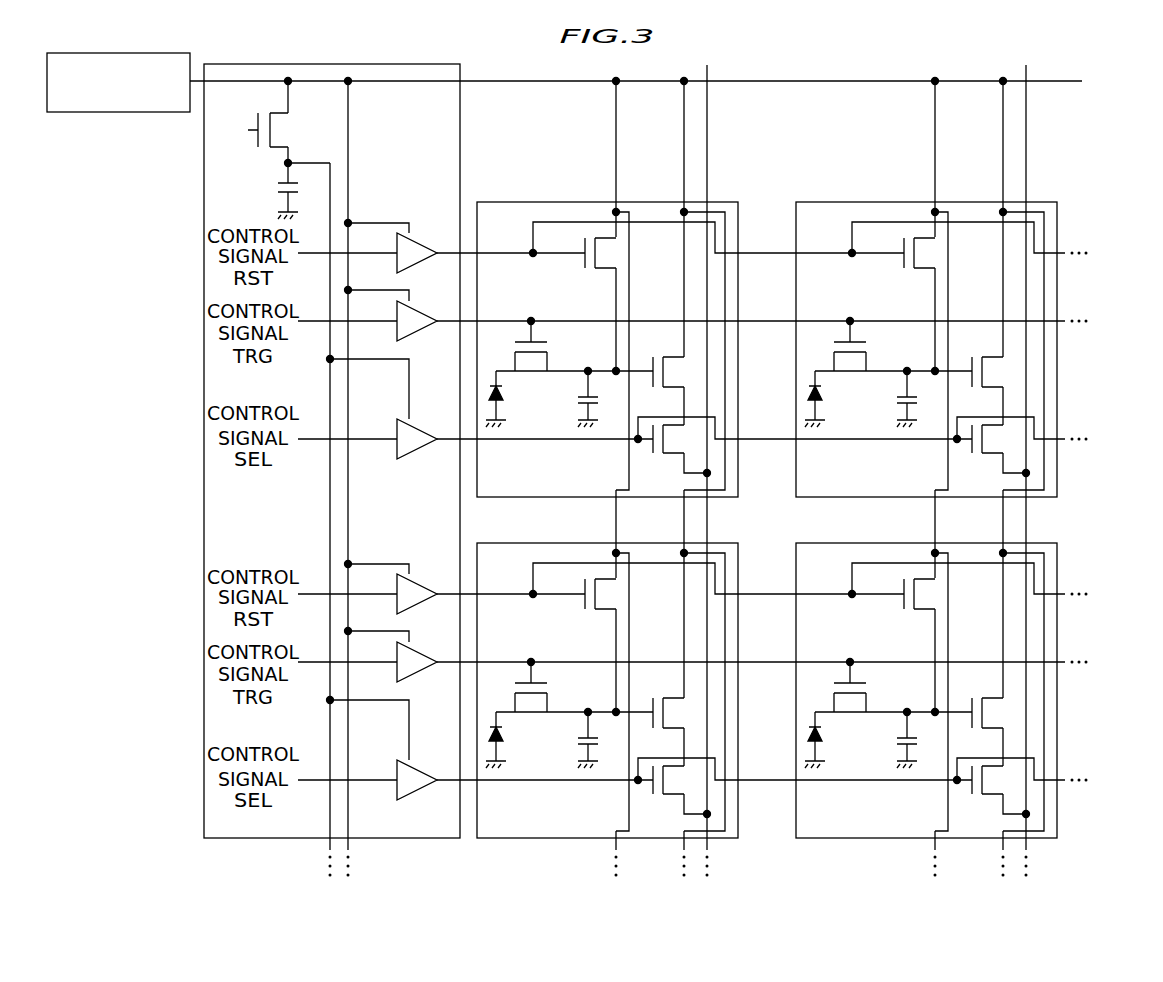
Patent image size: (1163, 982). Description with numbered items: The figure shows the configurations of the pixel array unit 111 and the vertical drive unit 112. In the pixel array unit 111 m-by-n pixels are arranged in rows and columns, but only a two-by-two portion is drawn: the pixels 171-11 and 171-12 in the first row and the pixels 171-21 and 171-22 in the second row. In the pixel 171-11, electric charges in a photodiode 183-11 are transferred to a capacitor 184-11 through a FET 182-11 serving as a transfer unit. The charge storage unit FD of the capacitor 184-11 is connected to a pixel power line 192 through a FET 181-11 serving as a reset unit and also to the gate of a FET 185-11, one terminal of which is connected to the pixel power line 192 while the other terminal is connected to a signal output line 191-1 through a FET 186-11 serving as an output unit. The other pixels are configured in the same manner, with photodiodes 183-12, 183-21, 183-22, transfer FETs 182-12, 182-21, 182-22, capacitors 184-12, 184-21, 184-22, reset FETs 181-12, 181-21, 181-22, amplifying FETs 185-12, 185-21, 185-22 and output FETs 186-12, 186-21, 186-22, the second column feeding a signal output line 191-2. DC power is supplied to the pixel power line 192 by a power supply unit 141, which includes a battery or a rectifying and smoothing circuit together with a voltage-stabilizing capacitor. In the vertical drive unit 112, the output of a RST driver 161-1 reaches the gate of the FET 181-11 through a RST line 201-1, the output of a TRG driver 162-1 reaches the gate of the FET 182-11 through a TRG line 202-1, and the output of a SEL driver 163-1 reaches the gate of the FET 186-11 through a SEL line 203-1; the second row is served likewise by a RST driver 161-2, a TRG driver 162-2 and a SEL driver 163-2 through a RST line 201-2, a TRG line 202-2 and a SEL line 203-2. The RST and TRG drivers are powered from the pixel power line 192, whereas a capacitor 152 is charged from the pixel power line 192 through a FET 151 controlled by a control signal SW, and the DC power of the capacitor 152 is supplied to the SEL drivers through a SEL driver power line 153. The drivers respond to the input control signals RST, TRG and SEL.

The pixel array unit 111 is at (1086, 832).
The vertical drive unit 112 is at (255, 840).
The power supply unit 141 is at (157, 113).
The FET 151 is at (290, 131).
The capacitor 152 is at (274, 188).
The SEL driver power line 153 is at (313, 161).
The RST driver 161-1 is at (421, 237).
The RST driver 161-2 is at (421, 578).
The TRG driver 162-1 is at (421, 304).
The TRG driver 162-2 is at (421, 645).
The SEL driver 163-1 is at (421, 424).
The SEL driver 163-2 is at (421, 765).
The pixel 171-11 is at (507, 201).
The pixel 171-12 is at (926, 329).
The pixel 171-21 is at (607, 670).
The pixel 171-22 is at (926, 670).
The FET 181-11 is at (591, 272).
The FET 181-12 is at (893, 273).
The FET 181-21 is at (574, 614).
The FET 181-22 is at (893, 614).
The FET 182-11 is at (548, 346).
The FET 182-12 is at (882, 346).
The FET 182-21 is at (563, 687).
The FET 182-22 is at (882, 687).
The photodiode 183-11 is at (502, 393).
The photodiode 183-12 is at (851, 399).
The photodiode 183-21 is at (532, 740).
The photodiode 183-22 is at (851, 740).
The capacitor 184-11 is at (579, 393).
The capacitor 184-12 is at (893, 398).
The capacitor 184-21 is at (574, 739).
The capacitor 184-22 is at (893, 739).
The FET 185-11 is at (657, 358).
The FET 185-12 is at (976, 355).
The FET 185-21 is at (657, 696).
The FET 185-22 is at (976, 696).
The FET 186-11 is at (657, 456).
The FET 186-12 is at (990, 459).
The FET 186-21 is at (671, 800).
The FET 186-22 is at (990, 800).
The signal output line 191-1 is at (708, 147).
The signal output line 191-2 is at (1027, 147).
The pixel power line 192 is at (533, 81).
The RST line 201-1 is at (767, 251).
The RST line 201-2 is at (767, 592).
The TRG line 202-1 is at (767, 319).
The TRG line 202-2 is at (767, 660).
The SEL line 203-1 is at (767, 437).
The SEL line 203-2 is at (767, 778).